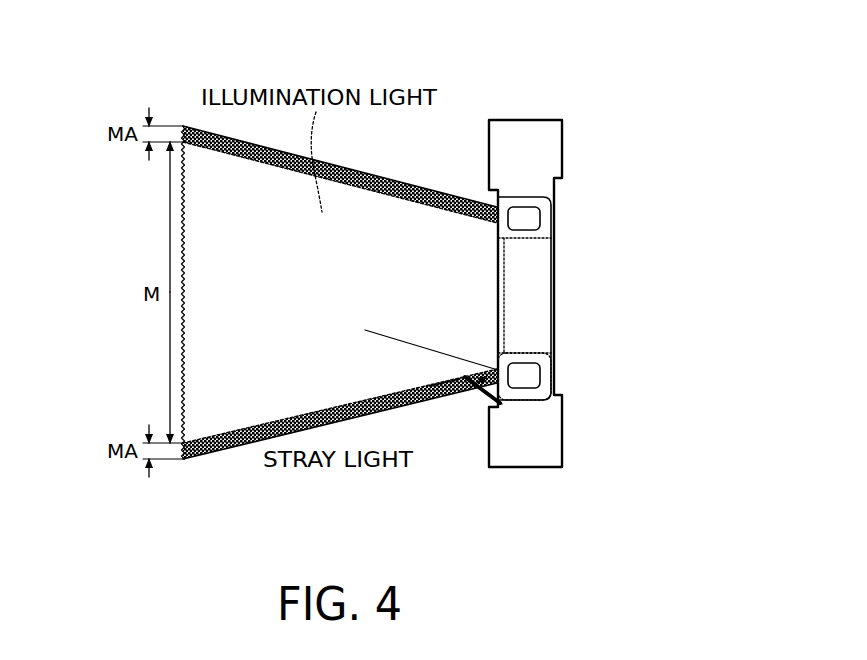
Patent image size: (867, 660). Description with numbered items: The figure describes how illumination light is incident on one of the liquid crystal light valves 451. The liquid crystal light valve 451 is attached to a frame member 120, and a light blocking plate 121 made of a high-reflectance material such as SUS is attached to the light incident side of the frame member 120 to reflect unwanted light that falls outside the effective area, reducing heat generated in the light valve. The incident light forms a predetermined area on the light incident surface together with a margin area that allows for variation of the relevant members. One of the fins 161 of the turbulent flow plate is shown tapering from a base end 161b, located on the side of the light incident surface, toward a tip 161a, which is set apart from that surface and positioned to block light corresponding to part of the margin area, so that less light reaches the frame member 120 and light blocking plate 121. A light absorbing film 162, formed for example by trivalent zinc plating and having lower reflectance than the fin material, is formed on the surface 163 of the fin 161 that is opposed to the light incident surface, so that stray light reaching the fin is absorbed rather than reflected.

The liquid crystal light valve 451 is at (564, 77).
The frame member 120 is at (541, 147).
The light blocking plate 121 is at (552, 242).
The surface 163 is at (609, 376).
The light absorbing film 162 is at (497, 387).
The fin 161 is at (477, 399).
The tip 161a is at (447, 393).
The base end 161b is at (502, 404).